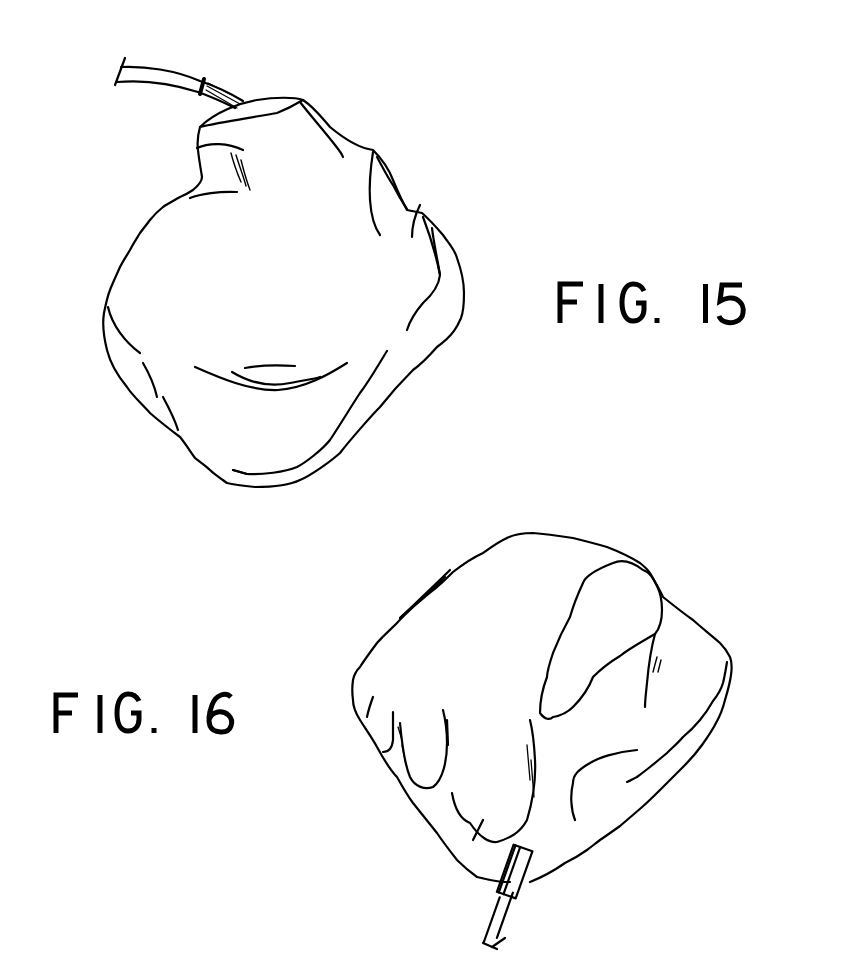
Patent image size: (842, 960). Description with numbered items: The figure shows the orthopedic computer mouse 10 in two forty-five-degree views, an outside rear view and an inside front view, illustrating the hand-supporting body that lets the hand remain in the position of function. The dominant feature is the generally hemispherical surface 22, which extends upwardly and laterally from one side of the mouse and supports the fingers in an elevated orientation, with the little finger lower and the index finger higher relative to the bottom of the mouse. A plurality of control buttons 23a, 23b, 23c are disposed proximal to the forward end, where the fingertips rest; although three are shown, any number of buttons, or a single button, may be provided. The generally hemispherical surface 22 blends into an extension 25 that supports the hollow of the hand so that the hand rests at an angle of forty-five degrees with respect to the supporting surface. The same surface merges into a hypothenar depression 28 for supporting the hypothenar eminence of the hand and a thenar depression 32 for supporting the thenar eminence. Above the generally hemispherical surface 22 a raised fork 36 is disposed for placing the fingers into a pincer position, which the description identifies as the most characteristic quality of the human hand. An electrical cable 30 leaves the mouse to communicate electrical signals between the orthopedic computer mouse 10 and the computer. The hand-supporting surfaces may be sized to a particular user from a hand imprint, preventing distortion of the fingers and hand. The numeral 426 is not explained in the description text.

In FIG. 15, the orthopedic computer mouse 10 is at (290, 97).
In FIG. 16, the orthopedic computer mouse 10 is at (537, 524).
In FIG. 15, the generally hemispherical surface 22 is at (342, 322).
In FIG. 16, the generally hemispherical surface 22 is at (420, 628).
In FIG. 15, the control button 23a is at (437, 249).
In FIG. 16, the control button 23a is at (383, 721).
In FIG. 15, the control button 23b is at (400, 192).
In FIG. 16, the control button 23b is at (417, 773).
In FIG. 15, the control button 23c is at (347, 142).
In FIG. 16, the control button 23c is at (470, 847).
In FIG. 15, the extension 25 is at (160, 354).
In FIG. 15, the hypothenar depression 28 is at (270, 450).
In FIG. 15, the electrical cable 30 is at (180, 77).
In FIG. 16, the electrical cable 30 is at (523, 890).
In FIG. 15, the thenar depression 32 is at (125, 280).
In FIG. 15, the raised fork 36 is at (197, 150).
In FIG. 16, the raised fork 36 is at (643, 582).
In FIG. 16, the fold 426 is at (607, 780).